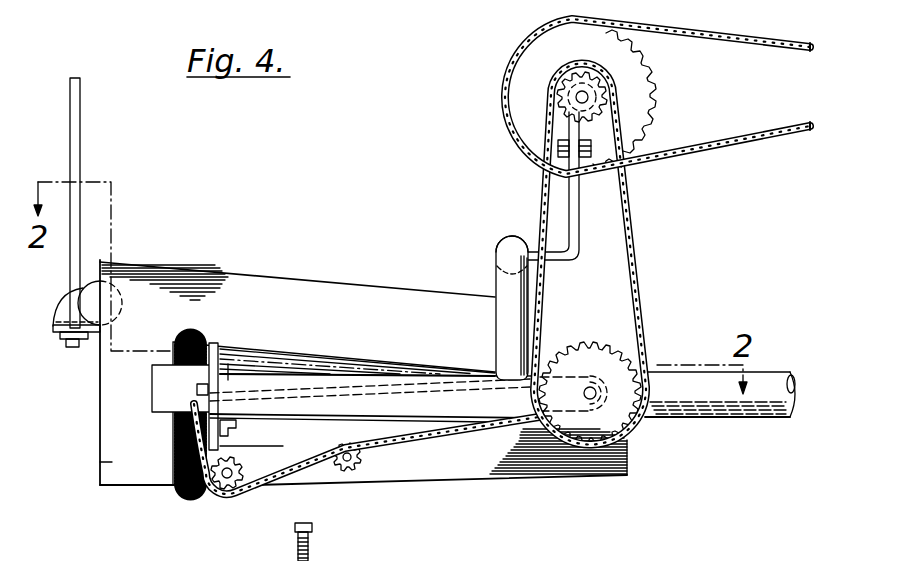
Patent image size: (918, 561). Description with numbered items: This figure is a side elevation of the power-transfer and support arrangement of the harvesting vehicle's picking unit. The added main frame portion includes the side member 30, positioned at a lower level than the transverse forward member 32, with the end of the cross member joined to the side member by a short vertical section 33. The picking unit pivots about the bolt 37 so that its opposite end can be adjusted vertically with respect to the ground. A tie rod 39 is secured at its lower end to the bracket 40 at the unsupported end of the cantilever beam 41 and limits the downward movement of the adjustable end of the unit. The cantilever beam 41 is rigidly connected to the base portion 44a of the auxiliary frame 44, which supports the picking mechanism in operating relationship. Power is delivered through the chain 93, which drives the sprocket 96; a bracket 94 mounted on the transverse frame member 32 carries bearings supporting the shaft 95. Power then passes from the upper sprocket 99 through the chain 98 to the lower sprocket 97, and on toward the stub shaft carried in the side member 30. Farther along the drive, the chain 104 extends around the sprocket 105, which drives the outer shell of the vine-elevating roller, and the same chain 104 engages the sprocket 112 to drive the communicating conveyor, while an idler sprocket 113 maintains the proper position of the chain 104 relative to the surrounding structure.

The side member 30 is at (732, 414).
The transverse forward member 32 is at (506, 240).
The short vertical sections 33 is at (500, 289).
The bolt 37 is at (197, 389).
The tie rod 39 is at (80, 149).
The bracket 40 is at (64, 308).
The cantilever beam 41 is at (90, 285).
The auxiliary frame 44 is at (95, 450).
The base portion 44a is at (290, 280).
The chain 93 is at (729, 33).
The bracket 94 is at (580, 211).
The shaft 95 is at (134, 551).
The sprocket 96 is at (540, 79).
The lower sprocket 97 is at (618, 356).
The chain 98 is at (640, 276).
The upper sprocket 99 is at (84, 548).
The chain 104 is at (433, 433).
The sprocket 105 is at (228, 427).
The sprocket 112 is at (230, 484).
The idler sprocket 113 is at (355, 465).